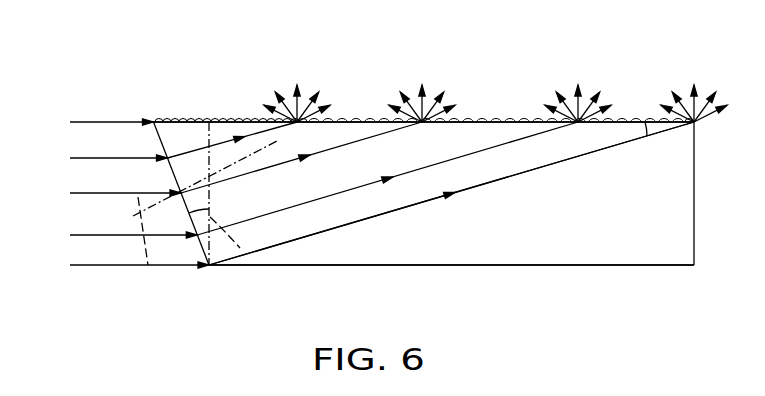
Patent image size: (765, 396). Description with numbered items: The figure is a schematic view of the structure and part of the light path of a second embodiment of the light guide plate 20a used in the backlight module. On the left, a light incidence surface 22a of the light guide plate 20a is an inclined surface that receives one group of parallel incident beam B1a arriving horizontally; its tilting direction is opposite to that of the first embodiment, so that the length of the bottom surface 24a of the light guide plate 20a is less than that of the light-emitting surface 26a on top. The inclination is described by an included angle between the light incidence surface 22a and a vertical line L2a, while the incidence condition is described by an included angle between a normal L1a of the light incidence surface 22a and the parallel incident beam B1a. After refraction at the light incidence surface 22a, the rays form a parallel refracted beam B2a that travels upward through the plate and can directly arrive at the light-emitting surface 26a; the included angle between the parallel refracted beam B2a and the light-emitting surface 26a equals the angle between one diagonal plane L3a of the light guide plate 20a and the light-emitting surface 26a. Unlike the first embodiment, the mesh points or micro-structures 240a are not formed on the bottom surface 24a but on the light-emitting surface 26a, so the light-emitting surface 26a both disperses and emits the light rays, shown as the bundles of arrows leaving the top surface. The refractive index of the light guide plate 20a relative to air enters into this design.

The light guide plate 20a is at (593, 203).
The light incidence surface 22a is at (172, 173).
The bottom surface 24a is at (493, 267).
The light-emitting surface 26a is at (499, 119).
The mesh points or micro-structures 240a is at (653, 119).
The parallel incident beam B1a is at (57, 123).
The parallel refracted beam B2a is at (431, 193).
The normal of the light incidence surface L1a is at (148, 265).
The vertical line L2a is at (241, 250).
The diagonal plane of the light guide plate L3a is at (380, 215).